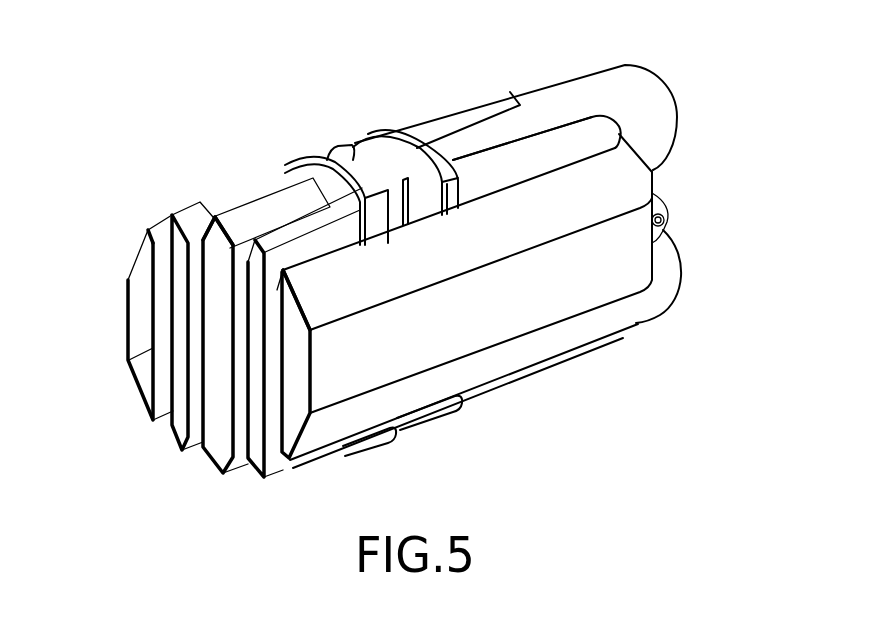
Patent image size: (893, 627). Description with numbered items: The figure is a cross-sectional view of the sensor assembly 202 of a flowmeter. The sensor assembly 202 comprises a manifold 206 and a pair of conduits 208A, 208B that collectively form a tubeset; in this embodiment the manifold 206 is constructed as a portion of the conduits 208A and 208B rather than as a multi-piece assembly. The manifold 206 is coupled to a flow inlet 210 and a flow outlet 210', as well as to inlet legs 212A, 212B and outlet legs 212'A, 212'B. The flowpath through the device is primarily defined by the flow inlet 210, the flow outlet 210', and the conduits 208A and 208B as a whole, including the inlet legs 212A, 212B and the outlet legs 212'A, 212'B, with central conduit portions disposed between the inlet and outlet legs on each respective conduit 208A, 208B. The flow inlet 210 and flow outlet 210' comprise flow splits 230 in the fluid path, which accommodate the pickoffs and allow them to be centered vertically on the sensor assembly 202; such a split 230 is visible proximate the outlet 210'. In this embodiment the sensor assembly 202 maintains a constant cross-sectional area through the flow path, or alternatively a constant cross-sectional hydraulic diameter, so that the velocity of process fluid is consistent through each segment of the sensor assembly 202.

The sensor assembly 202 is at (130, 466).
The manifold 206 is at (362, 168).
The conduit 208A is at (158, 234).
The conduit 208B is at (477, 342).
The flow inlet 210 is at (271, 162).
The flow outlet 210' is at (516, 110).
The inlet leg 212A is at (200, 213).
The inlet leg 212B is at (290, 238).
The outlet leg 212'A is at (468, 91).
The outlet leg 212'B is at (561, 257).
The flow split 230 is at (675, 198).